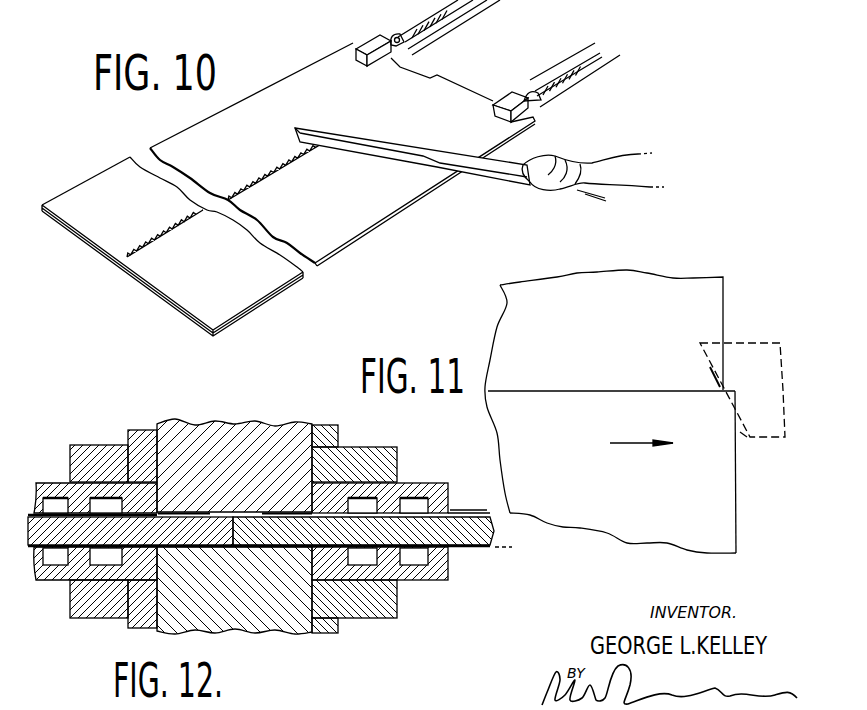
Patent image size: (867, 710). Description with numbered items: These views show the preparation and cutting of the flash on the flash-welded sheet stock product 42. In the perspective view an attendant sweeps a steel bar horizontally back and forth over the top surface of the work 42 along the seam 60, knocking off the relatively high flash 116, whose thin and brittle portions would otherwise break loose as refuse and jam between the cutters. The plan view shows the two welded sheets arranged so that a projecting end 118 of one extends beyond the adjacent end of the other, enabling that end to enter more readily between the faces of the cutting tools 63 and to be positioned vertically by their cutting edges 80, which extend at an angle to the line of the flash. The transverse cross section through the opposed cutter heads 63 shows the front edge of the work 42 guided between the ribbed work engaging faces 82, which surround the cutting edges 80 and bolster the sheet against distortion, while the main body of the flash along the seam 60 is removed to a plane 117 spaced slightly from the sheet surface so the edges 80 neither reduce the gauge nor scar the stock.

In FIG. 10, the sheet stock product 42 is at (353, 208).
In FIG. 11, the sheet stock product 42 is at (707, 505).
In FIG. 12, the sheet stock product 42 is at (472, 533).
In FIG. 10, the seam 60 is at (128, 257).
In FIG. 11, the seam 60 is at (675, 355).
In FIG. 12, the seam 60 is at (215, 512).
In FIG. 12, the cutter 63 is at (233, 533).
In FIG. 11, the cutting edge 80 is at (748, 433).
In FIG. 12, the cutting edge 80 is at (305, 510).
In FIG. 12, the work engaging face 82 is at (130, 550).
In FIG. 10, the high flash 116 is at (273, 167).
In FIG. 12, the plane 117 is at (461, 510).
In FIG. 11, the projecting end 118 is at (742, 390).